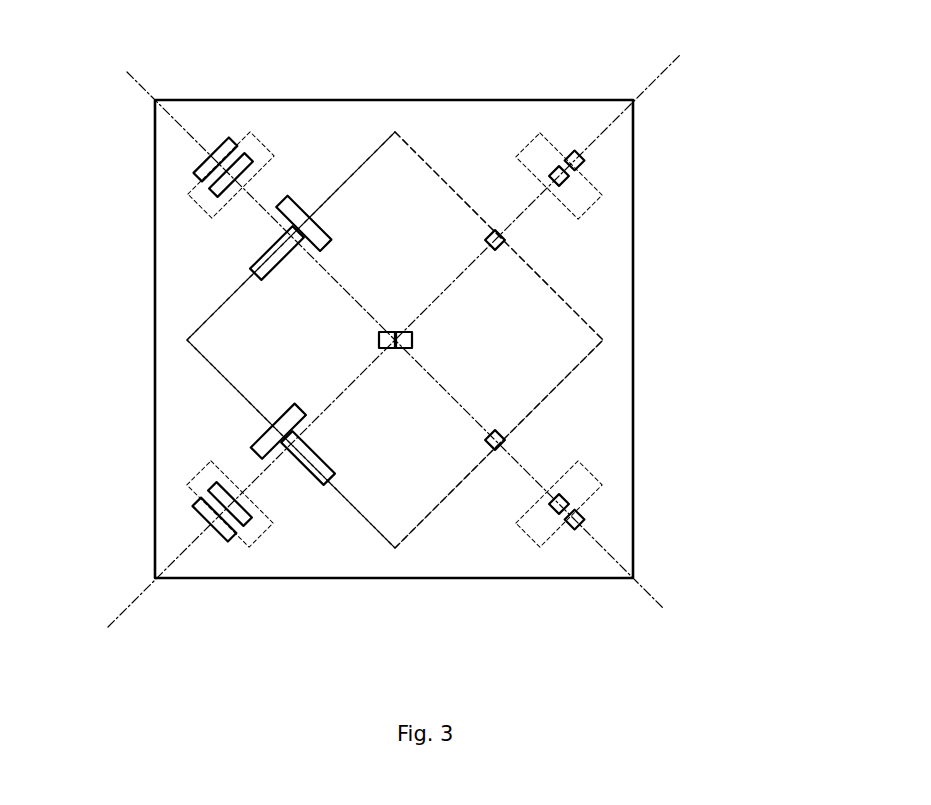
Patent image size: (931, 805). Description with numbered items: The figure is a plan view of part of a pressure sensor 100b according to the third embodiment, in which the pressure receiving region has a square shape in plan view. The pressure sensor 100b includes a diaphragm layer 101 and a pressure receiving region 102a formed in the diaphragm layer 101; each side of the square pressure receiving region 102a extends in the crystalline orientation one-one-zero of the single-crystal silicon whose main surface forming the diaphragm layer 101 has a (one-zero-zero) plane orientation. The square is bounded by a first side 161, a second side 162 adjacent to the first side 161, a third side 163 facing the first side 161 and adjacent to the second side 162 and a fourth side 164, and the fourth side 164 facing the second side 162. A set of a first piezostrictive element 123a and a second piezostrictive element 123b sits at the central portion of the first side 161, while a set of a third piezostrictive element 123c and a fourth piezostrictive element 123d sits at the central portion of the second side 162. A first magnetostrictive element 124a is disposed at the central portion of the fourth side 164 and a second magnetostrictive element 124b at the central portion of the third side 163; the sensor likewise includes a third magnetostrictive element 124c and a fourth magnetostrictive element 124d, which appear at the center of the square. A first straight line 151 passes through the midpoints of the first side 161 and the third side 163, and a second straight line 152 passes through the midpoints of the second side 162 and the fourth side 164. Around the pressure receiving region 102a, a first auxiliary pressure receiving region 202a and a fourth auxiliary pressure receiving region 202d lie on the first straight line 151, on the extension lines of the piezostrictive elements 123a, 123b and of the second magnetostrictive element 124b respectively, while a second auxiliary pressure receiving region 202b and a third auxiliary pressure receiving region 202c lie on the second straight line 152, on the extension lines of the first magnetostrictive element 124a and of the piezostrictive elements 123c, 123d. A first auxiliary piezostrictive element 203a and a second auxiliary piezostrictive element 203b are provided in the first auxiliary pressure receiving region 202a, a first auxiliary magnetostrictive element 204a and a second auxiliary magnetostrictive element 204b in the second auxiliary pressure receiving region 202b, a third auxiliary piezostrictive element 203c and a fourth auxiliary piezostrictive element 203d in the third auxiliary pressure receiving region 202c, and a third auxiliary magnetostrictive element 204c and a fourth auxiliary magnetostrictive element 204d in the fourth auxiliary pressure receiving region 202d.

The pressure sensor 100b is at (726, 330).
The diaphragm layer 101 is at (633, 320).
The pressure receiving region 102a is at (527, 298).
The first piezostrictive element 123a is at (290, 198).
The second piezostrictive element 123b is at (253, 266).
The third piezostrictive element 123c is at (253, 444).
The fourth piezostrictive element 123d is at (300, 470).
The first magnetostrictive element 124a is at (503, 240).
The second magnetostrictive element 124b is at (505, 440).
The third magnetostrictive element 124c is at (378, 339).
The fourth magnetostrictive element 124d is at (413, 343).
The first straight line 151 is at (133, 79).
The second straight line 152 is at (126, 609).
The first side 161 is at (380, 147).
The second side 162 is at (228, 381).
The third side 163 is at (445, 498).
The fourth side 164 is at (441, 181).
The first auxiliary pressure receiving region 202a is at (250, 132).
The second auxiliary pressure receiving region 202b is at (543, 130).
The third auxiliary pressure receiving region 202c is at (249, 547).
The fourth auxiliary pressure receiving region 202d is at (540, 547).
The first auxiliary piezostrictive element 203a is at (211, 191).
The second auxiliary piezostrictive element 203b is at (196, 175).
The third auxiliary piezostrictive element 203c is at (212, 486).
The fourth auxiliary piezostrictive element 203d is at (197, 507).
The first auxiliary magnetostrictive element 204a is at (566, 177).
The second auxiliary magnetostrictive element 204b is at (582, 162).
The third auxiliary magnetostrictive element 204c is at (567, 499).
The fourth auxiliary magnetostrictive element 204d is at (582, 518).